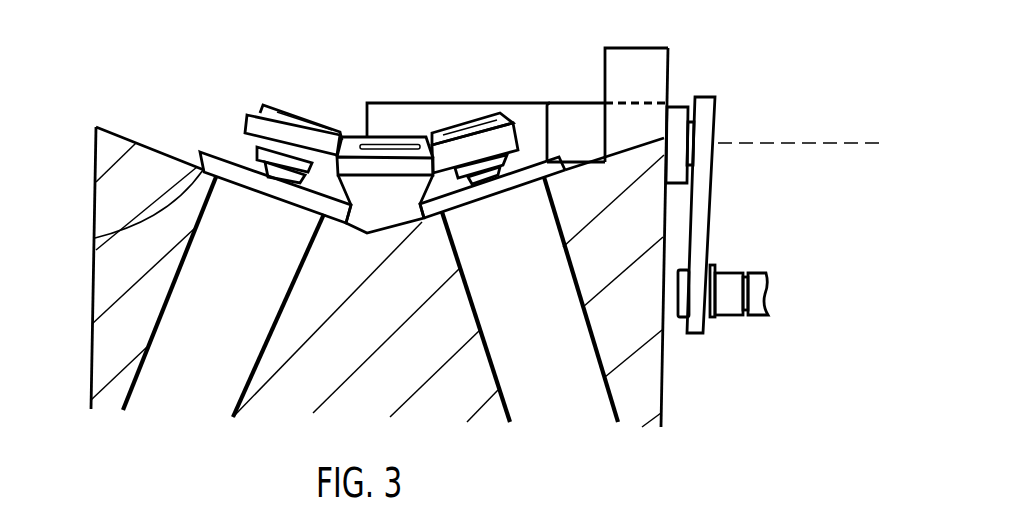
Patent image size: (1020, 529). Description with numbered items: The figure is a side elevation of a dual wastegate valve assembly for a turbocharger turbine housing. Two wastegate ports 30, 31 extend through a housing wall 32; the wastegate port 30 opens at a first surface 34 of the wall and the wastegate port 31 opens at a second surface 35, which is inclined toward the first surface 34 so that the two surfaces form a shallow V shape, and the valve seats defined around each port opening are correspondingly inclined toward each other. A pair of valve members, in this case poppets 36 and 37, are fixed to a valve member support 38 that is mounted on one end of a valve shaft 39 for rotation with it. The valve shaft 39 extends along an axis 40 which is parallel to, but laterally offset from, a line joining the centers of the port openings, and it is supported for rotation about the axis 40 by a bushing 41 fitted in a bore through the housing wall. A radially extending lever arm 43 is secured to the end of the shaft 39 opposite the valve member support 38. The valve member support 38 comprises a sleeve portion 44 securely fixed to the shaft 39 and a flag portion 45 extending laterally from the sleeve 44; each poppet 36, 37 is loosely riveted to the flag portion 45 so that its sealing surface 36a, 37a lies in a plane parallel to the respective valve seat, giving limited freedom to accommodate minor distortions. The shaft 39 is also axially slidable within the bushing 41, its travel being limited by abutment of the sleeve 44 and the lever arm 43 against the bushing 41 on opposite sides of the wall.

The wastegate port 30 is at (207, 380).
The wastegate port 31 is at (539, 386).
The housing wall 32 is at (115, 333).
The first surface 34 is at (122, 136).
The second surface 35 is at (391, 231).
The poppet 36 is at (213, 163).
The sealing surface 36a is at (95, 238).
The poppet 37 is at (550, 177).
The sealing surface 37a is at (434, 220).
The valve member support 38 is at (383, 167).
The valve shaft 39 is at (717, 136).
The axis 40 is at (783, 145).
The bushing 41 is at (578, 115).
The lever arm 43 is at (713, 250).
The sleeve portion 44 is at (428, 98).
The flag portion 45 is at (355, 137).